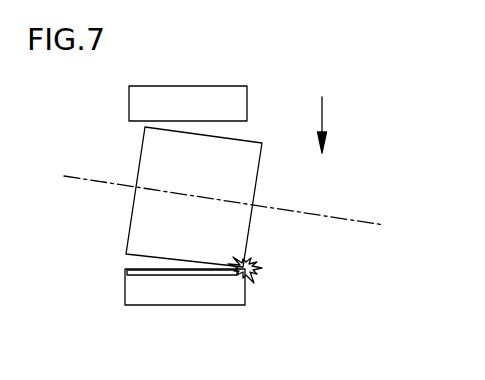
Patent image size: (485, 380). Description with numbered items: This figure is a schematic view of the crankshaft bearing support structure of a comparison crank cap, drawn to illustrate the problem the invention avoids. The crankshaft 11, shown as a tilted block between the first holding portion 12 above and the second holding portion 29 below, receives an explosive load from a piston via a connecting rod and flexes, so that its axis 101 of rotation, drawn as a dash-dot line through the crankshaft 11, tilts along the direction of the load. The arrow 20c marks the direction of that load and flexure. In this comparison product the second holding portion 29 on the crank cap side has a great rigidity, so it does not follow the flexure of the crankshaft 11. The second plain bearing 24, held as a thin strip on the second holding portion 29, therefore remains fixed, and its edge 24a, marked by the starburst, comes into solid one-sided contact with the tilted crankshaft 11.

The first holding portion 12 is at (190, 98).
The crankshaft 11 is at (244, 155).
The arrow 20c is at (323, 119).
The axis of rotation 101 is at (360, 222).
The second holding portion 29 is at (186, 292).
The second plain bearing 24 is at (137, 270).
The edge of the second plain bearing 24a is at (250, 278).